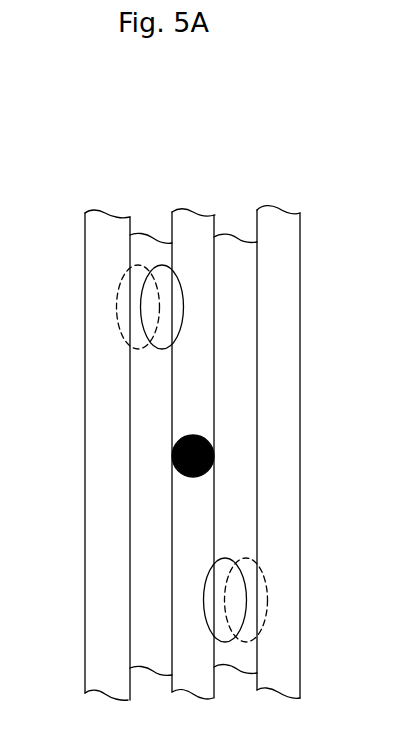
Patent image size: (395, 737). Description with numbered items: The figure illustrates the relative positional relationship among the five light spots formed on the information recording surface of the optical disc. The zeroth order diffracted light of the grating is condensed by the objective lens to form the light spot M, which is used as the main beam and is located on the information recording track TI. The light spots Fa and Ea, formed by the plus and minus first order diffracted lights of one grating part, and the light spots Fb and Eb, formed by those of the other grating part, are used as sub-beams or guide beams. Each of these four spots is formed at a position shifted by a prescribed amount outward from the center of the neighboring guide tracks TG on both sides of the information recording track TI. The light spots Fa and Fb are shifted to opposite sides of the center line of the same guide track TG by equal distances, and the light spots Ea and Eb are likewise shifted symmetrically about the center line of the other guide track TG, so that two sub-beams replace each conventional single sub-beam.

The information recording track TI is at (197, 220).
The guide track TG is at (233, 247).
The light spot Fa is at (118, 295).
The light spot Fb is at (183, 327).
The light spot M is at (172, 463).
The light spot Ea is at (267, 577).
The light spot Eb is at (203, 598).